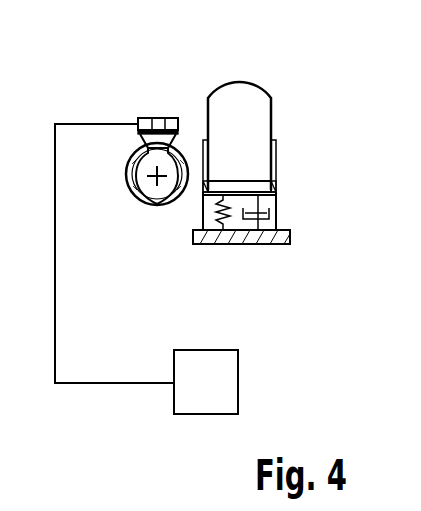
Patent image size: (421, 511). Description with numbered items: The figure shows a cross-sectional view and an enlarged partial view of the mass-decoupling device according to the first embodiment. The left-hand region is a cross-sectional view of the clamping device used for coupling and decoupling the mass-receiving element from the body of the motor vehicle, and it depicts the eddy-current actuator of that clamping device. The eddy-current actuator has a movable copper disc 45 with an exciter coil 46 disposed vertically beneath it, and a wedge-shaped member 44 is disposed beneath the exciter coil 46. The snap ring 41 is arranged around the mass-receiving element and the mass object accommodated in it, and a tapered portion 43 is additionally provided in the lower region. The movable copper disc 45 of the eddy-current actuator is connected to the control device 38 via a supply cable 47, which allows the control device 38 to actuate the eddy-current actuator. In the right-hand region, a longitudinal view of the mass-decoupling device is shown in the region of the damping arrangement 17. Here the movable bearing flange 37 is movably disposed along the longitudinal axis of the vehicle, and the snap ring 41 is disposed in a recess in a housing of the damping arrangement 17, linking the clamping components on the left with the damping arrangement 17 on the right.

The damping arrangement 17 is at (262, 268).
The movable bearing flange 37 is at (240, 82).
The control device 38 is at (238, 385).
The snap ring 41 is at (129, 187).
The tapered portion 43 is at (157, 206).
The wedge-shaped member 44 is at (140, 152).
The movable copper disc 45 is at (147, 118).
The exciter coil 46 is at (140, 131).
The supply cable 47 is at (107, 382).